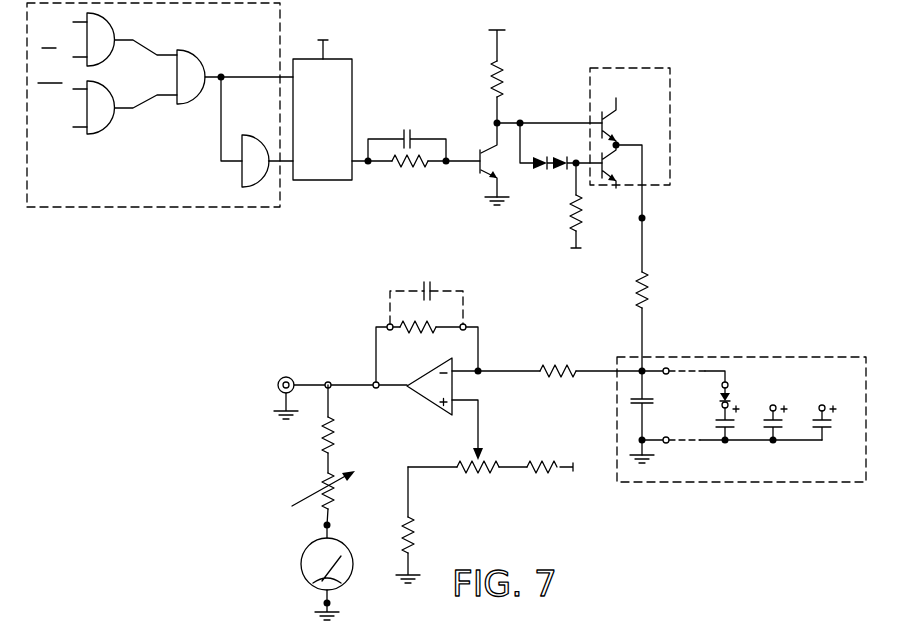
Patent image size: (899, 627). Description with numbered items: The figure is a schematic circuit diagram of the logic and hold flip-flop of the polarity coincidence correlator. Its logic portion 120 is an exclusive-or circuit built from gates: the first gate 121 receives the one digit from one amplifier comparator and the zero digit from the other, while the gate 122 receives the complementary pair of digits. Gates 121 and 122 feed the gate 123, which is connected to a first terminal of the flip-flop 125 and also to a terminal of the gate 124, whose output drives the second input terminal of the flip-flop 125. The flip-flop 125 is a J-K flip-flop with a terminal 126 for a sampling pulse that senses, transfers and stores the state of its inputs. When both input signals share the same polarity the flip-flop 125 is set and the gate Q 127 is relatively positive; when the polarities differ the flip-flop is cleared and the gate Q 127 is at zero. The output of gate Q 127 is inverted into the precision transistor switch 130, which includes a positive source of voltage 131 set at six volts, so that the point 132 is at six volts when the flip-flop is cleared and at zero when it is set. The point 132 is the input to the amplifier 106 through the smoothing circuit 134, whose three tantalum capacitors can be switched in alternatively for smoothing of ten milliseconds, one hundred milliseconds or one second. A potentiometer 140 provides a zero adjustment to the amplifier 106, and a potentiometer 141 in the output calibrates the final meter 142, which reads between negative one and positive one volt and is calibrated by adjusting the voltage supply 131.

The amplifier 106 is at (479, 320).
The logic portion 120 is at (86, 208).
The first gate 121 is at (112, 28).
The gate 122 is at (111, 86).
The gate 123 is at (203, 54).
The gate 124 is at (243, 175).
The flip-flop 125 is at (355, 70).
The terminal 126 is at (327, 44).
The gate Q 127 is at (361, 164).
The precision transistor switch 130 is at (678, 84).
The positive source of voltage 131 is at (618, 68).
The point 132 is at (648, 218).
The smoothing circuit 134 is at (763, 356).
The potentiometer 140 is at (468, 458).
The potentiometer 141 is at (322, 478).
The meter 142 is at (302, 577).